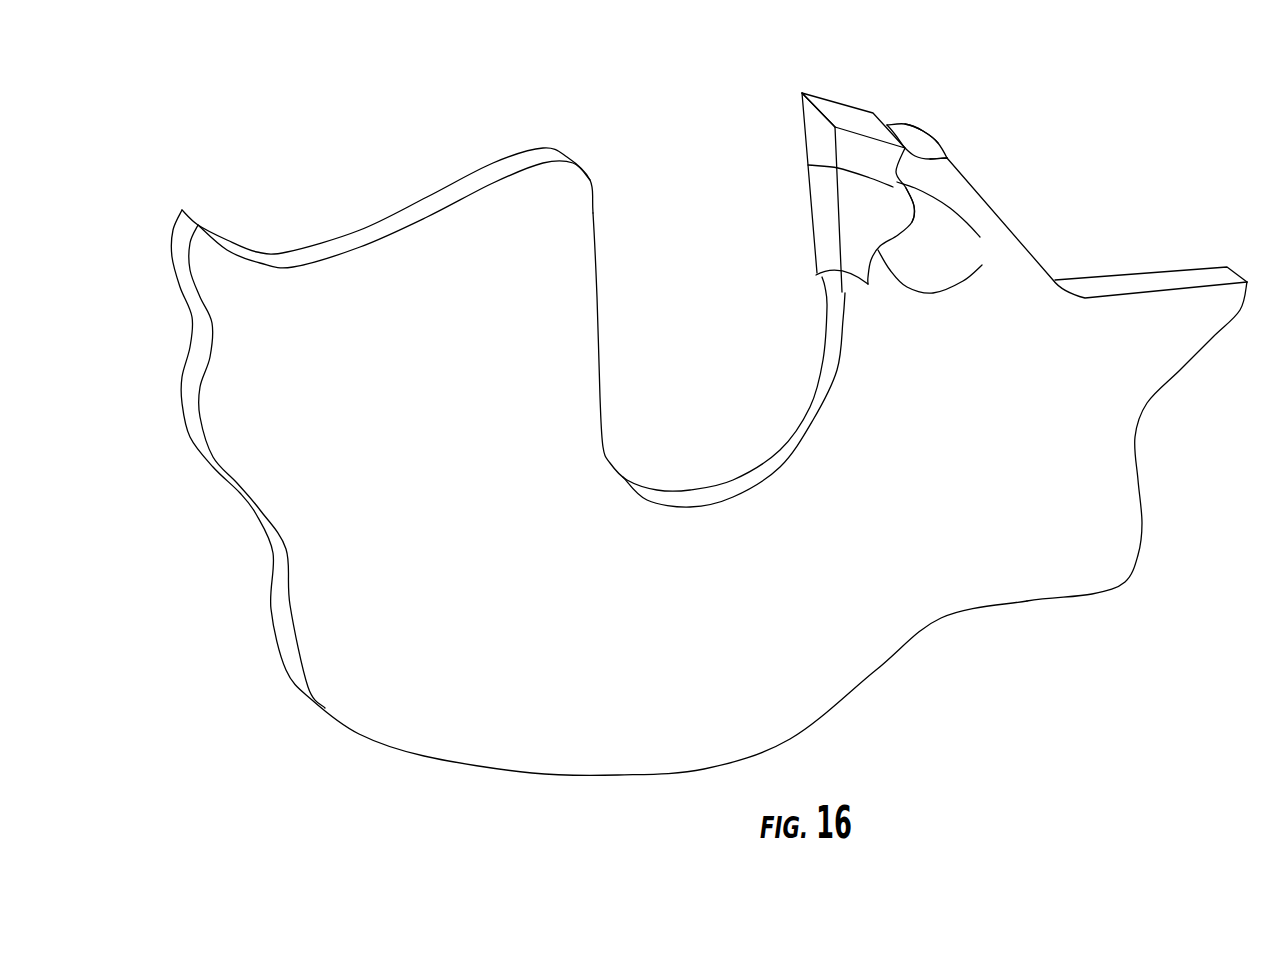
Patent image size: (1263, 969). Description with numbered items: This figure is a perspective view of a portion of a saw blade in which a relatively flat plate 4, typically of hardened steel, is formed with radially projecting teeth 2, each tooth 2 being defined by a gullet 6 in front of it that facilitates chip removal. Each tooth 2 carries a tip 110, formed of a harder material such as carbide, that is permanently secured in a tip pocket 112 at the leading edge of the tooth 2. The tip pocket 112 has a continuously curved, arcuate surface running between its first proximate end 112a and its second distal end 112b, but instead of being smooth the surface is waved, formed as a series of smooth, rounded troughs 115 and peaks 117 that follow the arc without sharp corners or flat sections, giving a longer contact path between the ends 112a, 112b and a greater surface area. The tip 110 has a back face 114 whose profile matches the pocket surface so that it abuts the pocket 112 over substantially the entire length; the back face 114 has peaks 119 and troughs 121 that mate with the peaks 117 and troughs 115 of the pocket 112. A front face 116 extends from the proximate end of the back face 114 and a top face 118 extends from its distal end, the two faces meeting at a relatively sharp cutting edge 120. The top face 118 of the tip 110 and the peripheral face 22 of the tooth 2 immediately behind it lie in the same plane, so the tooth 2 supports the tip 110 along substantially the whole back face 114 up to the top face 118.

The tooth 2 is at (709, 462).
The plate 4 is at (1117, 519).
The gullet 6 is at (737, 480).
The peripheral face 22 is at (920, 140).
The tip 110 is at (830, 193).
The tip pocket 112 is at (888, 242).
The first proximate end 112a is at (850, 295).
The second distal end 112b is at (888, 127).
The back face 114 is at (817, 198).
The troughs 115 is at (943, 157).
The front face 116 is at (810, 197).
The peaks 117 is at (980, 268).
The top face 118 is at (850, 113).
The peaks 119 is at (835, 124).
The cutting edge 120 is at (807, 102).
The troughs 121 is at (907, 218).